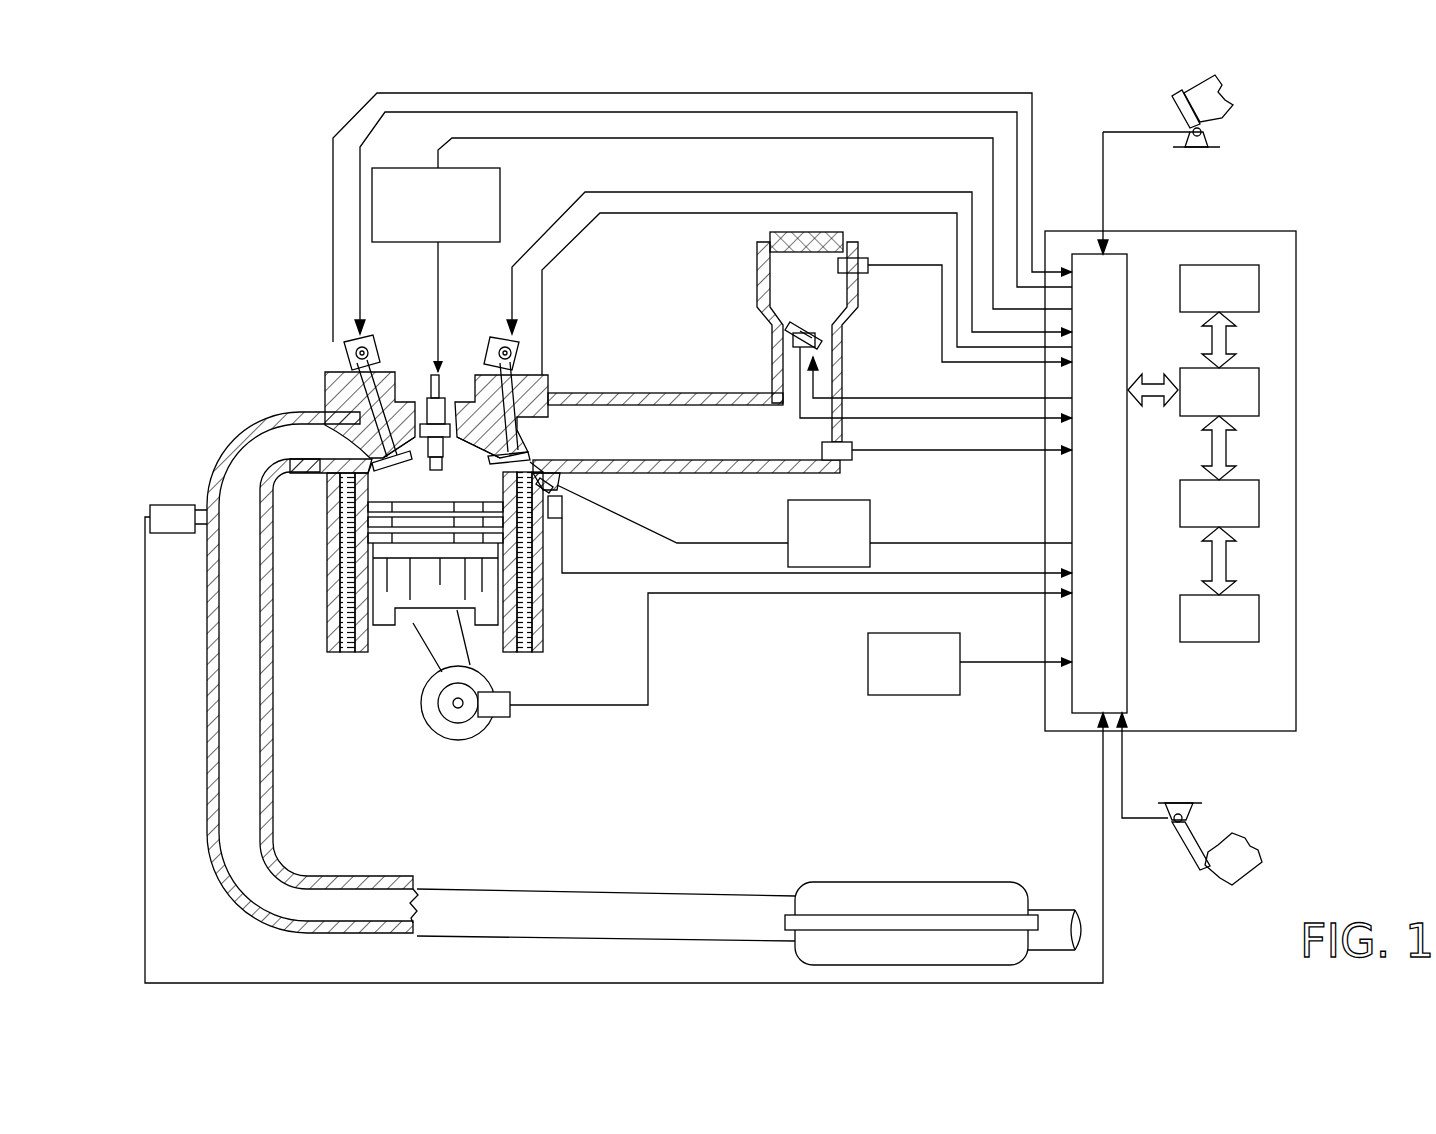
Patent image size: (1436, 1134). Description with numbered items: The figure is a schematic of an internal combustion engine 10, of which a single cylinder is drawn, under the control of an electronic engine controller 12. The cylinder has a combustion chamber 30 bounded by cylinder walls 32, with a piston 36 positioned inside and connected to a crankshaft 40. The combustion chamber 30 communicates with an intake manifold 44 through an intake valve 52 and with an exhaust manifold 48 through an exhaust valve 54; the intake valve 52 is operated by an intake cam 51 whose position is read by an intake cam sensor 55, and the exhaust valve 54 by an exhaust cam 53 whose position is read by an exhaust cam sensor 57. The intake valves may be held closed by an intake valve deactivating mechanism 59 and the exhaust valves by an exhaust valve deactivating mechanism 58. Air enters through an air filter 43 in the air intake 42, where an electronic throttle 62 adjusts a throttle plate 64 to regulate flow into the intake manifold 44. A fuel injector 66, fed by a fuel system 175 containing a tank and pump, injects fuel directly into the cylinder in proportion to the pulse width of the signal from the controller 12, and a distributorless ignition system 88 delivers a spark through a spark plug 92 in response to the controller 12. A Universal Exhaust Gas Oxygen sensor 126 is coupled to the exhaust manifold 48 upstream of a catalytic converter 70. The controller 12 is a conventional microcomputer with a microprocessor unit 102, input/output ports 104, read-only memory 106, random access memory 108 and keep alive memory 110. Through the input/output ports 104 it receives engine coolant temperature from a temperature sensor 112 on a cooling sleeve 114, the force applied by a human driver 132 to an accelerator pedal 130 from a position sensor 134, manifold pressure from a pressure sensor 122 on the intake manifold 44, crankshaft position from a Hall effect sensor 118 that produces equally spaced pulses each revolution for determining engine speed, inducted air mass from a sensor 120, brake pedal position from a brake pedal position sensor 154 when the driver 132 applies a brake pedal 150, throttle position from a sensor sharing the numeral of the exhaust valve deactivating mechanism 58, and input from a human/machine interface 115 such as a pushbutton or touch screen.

The internal combustion engine 10 is at (250, 320).
The electronic engine controller 12 is at (1283, 231).
The combustion chamber 30 is at (433, 483).
The cylinder walls 32 is at (367, 633).
The piston 36 is at (415, 595).
The crankshaft 40 is at (443, 730).
The air intake 42 is at (807, 342).
The air filter 43 is at (770, 233).
The intake manifold 44 is at (686, 441).
The exhaust manifold 48 is at (310, 672).
The intake cam 51 is at (508, 330).
The intake valve 52 is at (482, 445).
The exhaust cam 53 is at (365, 332).
The exhaust valve 54 is at (328, 423).
The intake cam sensor 55 is at (518, 358).
The exhaust cam sensor 57 is at (347, 360).
The exhaust valve deactivating mechanism 58 is at (373, 368).
The intake valve deactivating mechanism 59 is at (498, 363).
The electronic throttle 62 is at (822, 331).
The throttle plate 64 is at (790, 323).
The fuel injector 66 is at (516, 490).
The catalytic converter 70 is at (842, 882).
The distributorless ignition system 88 is at (389, 168).
The spark plug 92 is at (437, 375).
The microprocessor unit 102 is at (1259, 392).
The input/output ports 104 is at (1130, 265).
The read-only memory 106 is at (1259, 287).
The random access memory 108 is at (1259, 504).
The keep alive memory 110 is at (1259, 618).
The temperature sensor 112 is at (565, 517).
The cooling sleeve 114 is at (538, 600).
The human/machine interface 115 is at (970, 664).
The Hall effect sensor 118 is at (510, 693).
The air mass sensor 120 is at (860, 258).
The pressure sensor 122 is at (845, 460).
The Universal Exhaust Gas Oxygen sensor 126 is at (152, 506).
The accelerator pedal 130 is at (1170, 108).
The human driver 132 is at (1232, 95).
The position sensor 134 is at (1205, 131).
The brake pedal 150 is at (1200, 868).
The brake pedal position sensor 154 is at (1170, 812).
The fuel system 175 is at (814, 526).